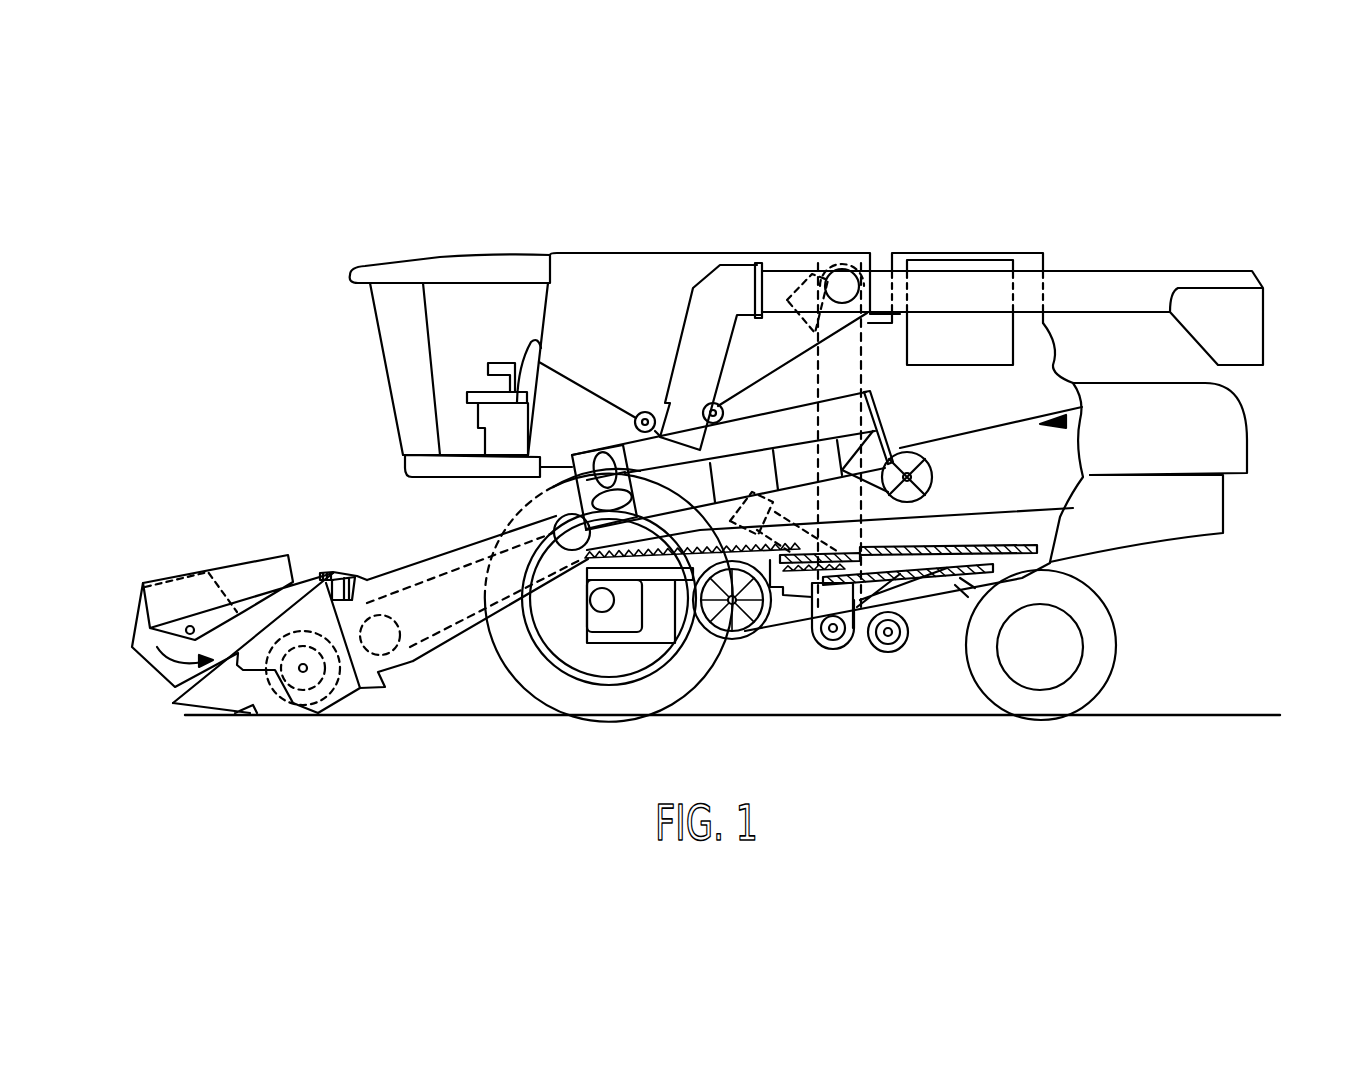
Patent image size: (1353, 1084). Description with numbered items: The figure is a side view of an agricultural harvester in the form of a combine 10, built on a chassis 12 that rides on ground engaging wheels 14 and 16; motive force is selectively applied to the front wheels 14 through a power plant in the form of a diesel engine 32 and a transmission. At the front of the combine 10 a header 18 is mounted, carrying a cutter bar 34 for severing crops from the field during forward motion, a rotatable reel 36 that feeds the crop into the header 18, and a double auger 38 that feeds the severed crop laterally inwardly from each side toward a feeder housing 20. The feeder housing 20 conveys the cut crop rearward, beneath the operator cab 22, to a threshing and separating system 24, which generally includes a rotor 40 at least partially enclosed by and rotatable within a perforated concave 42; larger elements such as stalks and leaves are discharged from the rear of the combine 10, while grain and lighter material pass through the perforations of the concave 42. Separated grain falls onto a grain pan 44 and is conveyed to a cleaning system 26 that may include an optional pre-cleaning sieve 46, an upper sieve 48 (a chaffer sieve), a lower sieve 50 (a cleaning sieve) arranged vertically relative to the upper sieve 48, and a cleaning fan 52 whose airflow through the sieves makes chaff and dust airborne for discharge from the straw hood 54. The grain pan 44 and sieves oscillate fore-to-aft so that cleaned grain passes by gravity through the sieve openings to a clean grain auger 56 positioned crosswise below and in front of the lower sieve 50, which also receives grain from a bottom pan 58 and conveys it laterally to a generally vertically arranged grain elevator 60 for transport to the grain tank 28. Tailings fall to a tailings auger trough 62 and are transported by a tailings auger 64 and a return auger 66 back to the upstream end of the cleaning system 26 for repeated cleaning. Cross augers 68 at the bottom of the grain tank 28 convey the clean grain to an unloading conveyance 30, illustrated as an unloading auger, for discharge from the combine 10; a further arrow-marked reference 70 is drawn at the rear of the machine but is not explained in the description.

The combine 10 is at (447, 253).
The chassis 12 is at (1052, 563).
The front wheels 14 is at (518, 676).
The rear wheels 16 is at (1115, 658).
The header 18 is at (230, 557).
The feeder housing 20 is at (420, 570).
The operator cab 22 is at (384, 348).
The threshing and separating system 24 is at (528, 497).
The cleaning system 26 is at (789, 655).
The grain tank 28 is at (588, 262).
The unloading conveyance 30 is at (1123, 280).
The diesel engine 32 is at (947, 265).
The cutter bar 34 is at (248, 716).
The rotatable reel 36 is at (140, 618).
The double auger 38 is at (303, 690).
The rotor 40 is at (602, 463).
The perforated concave 42 is at (770, 440).
The grain pan 44 is at (587, 577).
The pre-cleaning sieve 46 is at (880, 549).
The upper sieve 48 is at (958, 552).
The lower sieve 50 is at (933, 577).
The cleaning fan 52 is at (735, 640).
The straw hood 54 is at (1230, 425).
The clean grain auger 56 is at (840, 641).
The bottom pan 58 is at (967, 584).
The grain elevator 60 is at (866, 372).
The tailings auger trough 62 is at (962, 592).
The tailings auger 64 is at (890, 652).
The return auger 66 is at (805, 536).
The cross augers 68 is at (648, 412).
The residue discharge direction 70 is at (1195, 547).